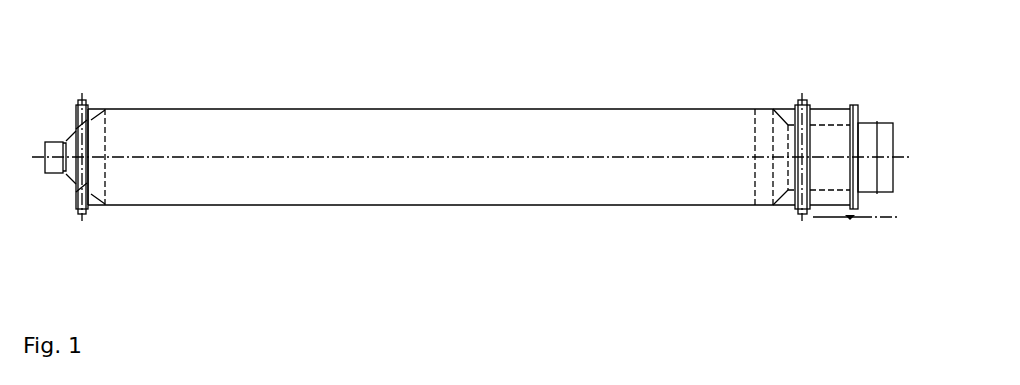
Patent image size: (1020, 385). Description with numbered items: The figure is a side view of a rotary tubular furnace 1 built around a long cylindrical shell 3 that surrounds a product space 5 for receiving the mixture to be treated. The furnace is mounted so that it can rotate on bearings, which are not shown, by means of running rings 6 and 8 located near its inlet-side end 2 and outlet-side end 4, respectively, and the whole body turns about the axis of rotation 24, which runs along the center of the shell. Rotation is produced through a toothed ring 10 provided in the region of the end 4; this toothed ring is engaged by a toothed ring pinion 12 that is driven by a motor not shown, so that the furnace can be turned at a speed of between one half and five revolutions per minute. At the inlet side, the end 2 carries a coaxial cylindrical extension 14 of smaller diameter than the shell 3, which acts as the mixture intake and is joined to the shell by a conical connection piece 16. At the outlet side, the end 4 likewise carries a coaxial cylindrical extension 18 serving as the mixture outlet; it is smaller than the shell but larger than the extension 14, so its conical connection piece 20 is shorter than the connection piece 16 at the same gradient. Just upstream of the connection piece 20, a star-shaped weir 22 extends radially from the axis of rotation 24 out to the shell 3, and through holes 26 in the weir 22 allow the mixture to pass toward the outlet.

The rotary tubular furnace 1 is at (398, 80).
The inlet-side end 2 is at (76, 205).
The cylindrical shell 3 is at (255, 109).
The outlet-side end 4 is at (863, 115).
The product space 5 is at (333, 127).
The running ring 6 is at (83, 99).
The running ring 8 is at (803, 98).
The toothed ring 10 is at (846, 114).
The toothed ring pinion 12 is at (850, 219).
The coaxial cylindrical extension 14 is at (52, 145).
The conical connection piece 16 is at (70, 172).
The coaxial cylindrical extension 18 is at (888, 127).
The conical connection piece 20 is at (782, 193).
The star-shaped weir 22 is at (755, 180).
The axis of rotation 24 is at (168, 156).
The through holes 26 is at (754, 126).